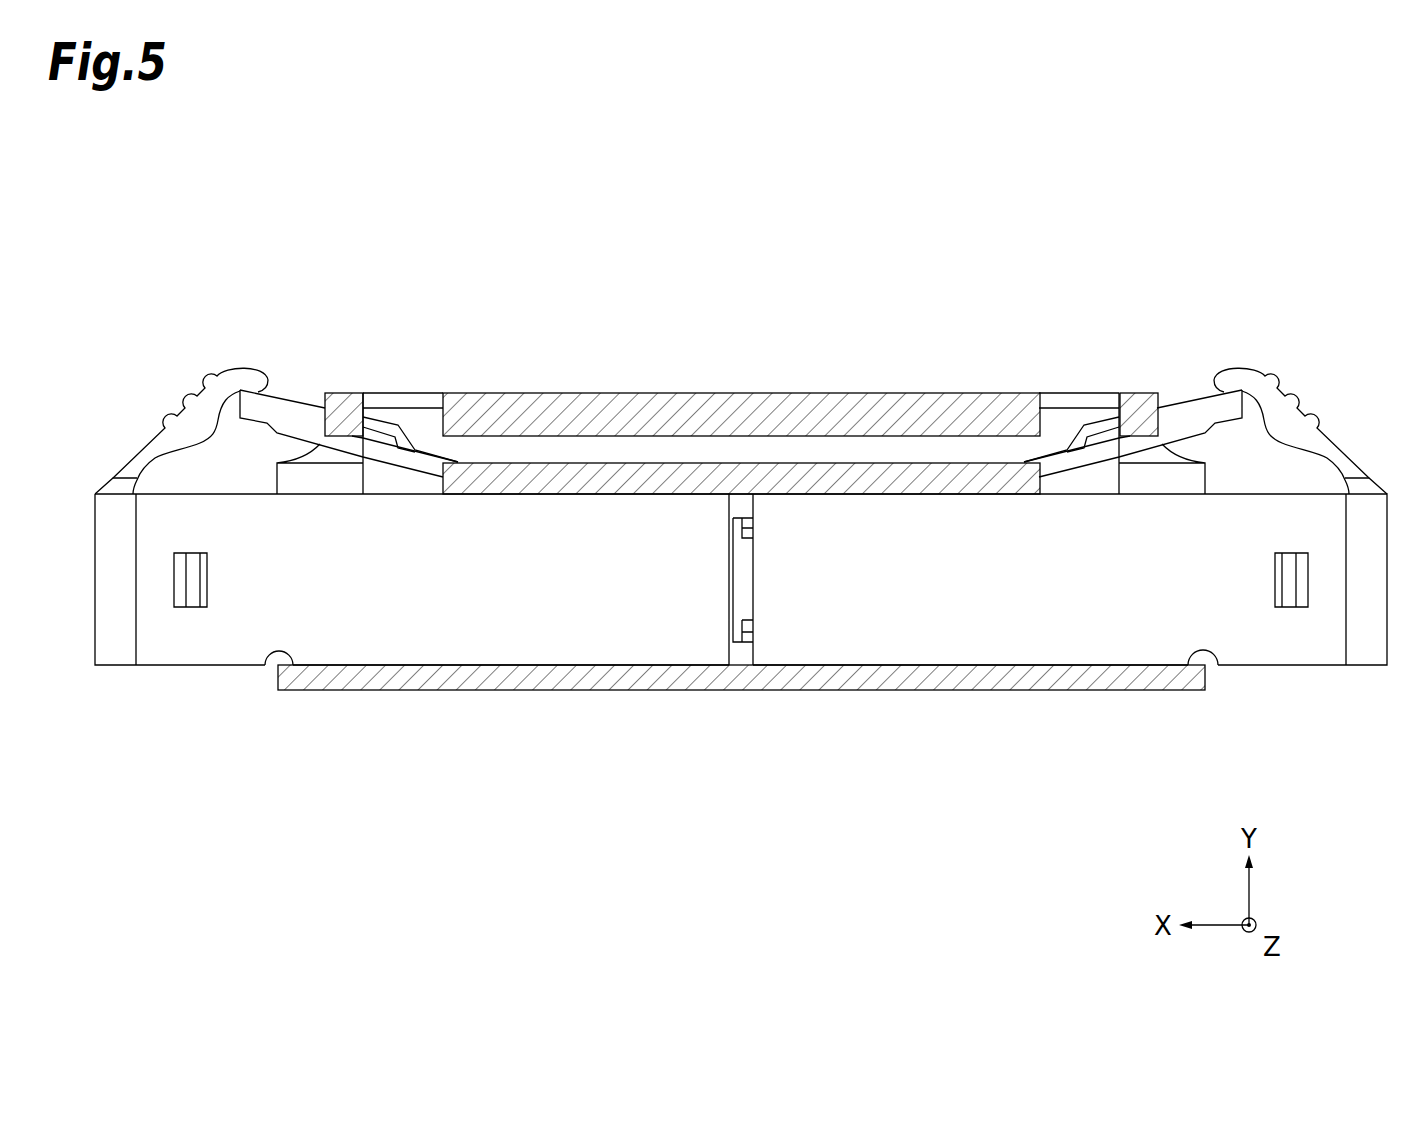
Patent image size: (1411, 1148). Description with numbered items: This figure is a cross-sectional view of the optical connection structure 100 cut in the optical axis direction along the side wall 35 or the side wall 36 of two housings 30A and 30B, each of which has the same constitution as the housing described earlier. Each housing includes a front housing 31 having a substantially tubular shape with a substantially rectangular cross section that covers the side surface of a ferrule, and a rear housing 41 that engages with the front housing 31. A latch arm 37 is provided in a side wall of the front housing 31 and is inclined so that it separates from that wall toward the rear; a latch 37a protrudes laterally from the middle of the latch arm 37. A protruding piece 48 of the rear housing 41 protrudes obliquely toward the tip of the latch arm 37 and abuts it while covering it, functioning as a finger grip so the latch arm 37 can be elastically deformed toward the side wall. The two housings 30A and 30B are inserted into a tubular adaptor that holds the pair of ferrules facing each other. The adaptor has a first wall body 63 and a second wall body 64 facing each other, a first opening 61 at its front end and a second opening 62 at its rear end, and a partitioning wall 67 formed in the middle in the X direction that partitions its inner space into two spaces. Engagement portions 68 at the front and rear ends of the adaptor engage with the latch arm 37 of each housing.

The optical connection structure 100 is at (1133, 238).
The housing 30A is at (1267, 671).
The housing 30B is at (211, 671).
The rear housing 41 is at (116, 638).
The protruding piece 48 is at (1305, 410).
The first opening 61 is at (265, 666).
The second opening 62 is at (1218, 666).
The front housing 31 is at (577, 636).
The side wall 35 is at (955, 636).
The side wall 36 is at (390, 636).
The wall body 64 is at (858, 691).
The wall body 63 is at (775, 392).
The partitioning wall 67 is at (895, 462).
The engagement portion 68 is at (343, 392).
The latch arm 37 is at (1192, 410).
The latch 37a is at (392, 410).